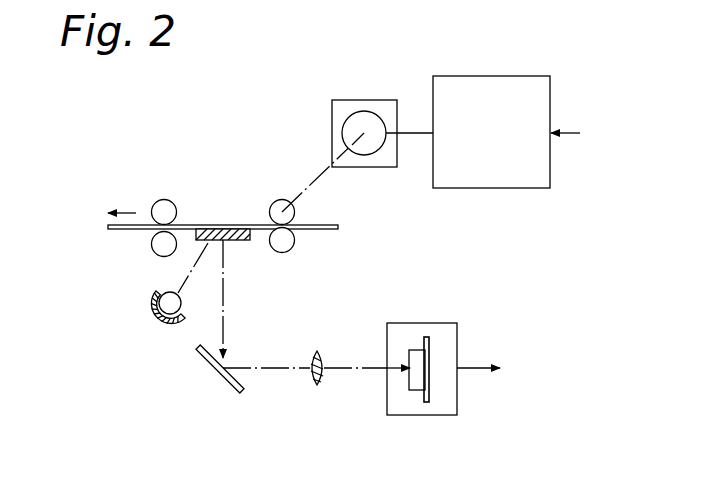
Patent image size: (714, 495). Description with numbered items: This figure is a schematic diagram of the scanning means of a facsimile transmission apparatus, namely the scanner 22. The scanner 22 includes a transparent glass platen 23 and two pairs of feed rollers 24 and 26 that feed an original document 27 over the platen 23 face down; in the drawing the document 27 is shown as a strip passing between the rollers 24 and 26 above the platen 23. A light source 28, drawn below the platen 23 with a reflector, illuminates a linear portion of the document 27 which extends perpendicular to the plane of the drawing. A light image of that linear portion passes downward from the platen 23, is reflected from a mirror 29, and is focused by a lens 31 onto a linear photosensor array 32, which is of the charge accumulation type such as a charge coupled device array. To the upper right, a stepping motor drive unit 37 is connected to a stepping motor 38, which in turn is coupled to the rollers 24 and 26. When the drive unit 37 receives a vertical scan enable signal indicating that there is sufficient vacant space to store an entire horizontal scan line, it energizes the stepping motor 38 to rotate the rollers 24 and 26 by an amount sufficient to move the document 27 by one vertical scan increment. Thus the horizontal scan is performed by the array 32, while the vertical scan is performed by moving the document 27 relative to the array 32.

The scanner 22 is at (133, 166).
The transparent glass platen 23 is at (244, 241).
The feed rollers 24 is at (282, 212).
The feed rollers 26 is at (175, 244).
The original document 27 is at (129, 230).
The light source 28 is at (154, 326).
The mirror 29 is at (224, 397).
The lens 31 is at (313, 387).
The linear photosensor array 32 is at (438, 416).
The stepping motor drive unit 37 is at (506, 75).
The stepping motor 38 is at (382, 99).